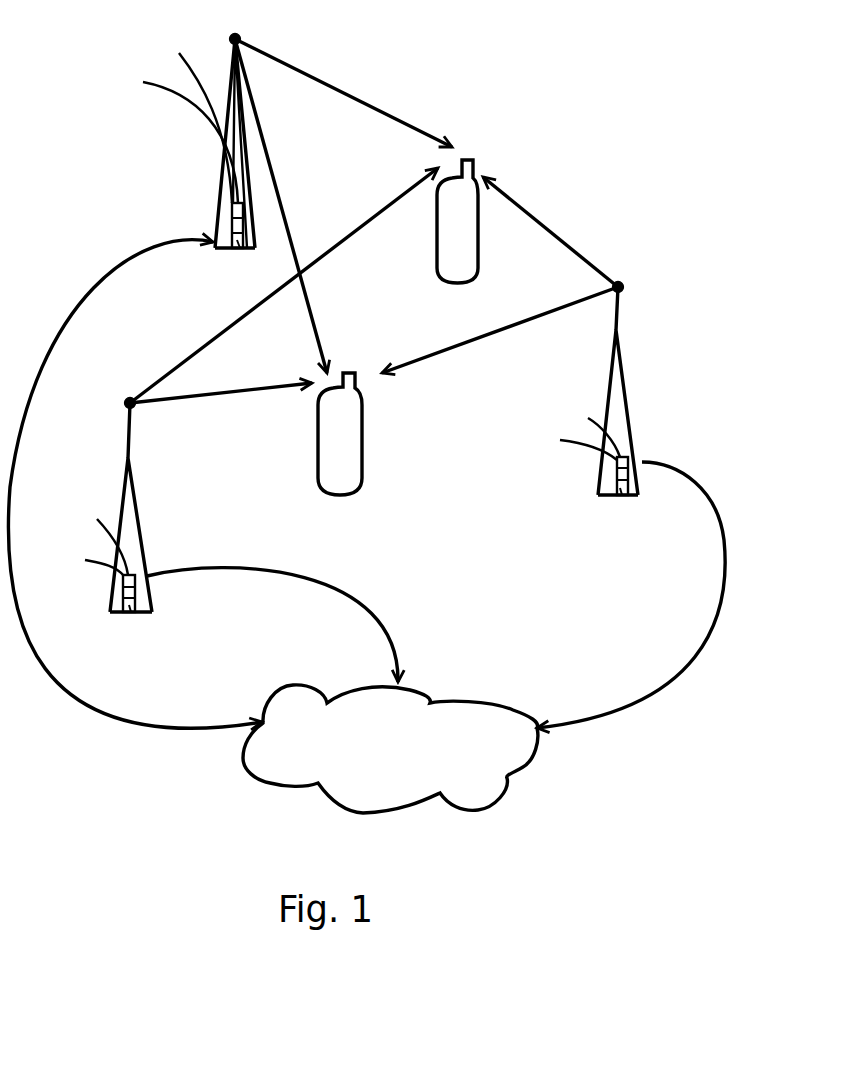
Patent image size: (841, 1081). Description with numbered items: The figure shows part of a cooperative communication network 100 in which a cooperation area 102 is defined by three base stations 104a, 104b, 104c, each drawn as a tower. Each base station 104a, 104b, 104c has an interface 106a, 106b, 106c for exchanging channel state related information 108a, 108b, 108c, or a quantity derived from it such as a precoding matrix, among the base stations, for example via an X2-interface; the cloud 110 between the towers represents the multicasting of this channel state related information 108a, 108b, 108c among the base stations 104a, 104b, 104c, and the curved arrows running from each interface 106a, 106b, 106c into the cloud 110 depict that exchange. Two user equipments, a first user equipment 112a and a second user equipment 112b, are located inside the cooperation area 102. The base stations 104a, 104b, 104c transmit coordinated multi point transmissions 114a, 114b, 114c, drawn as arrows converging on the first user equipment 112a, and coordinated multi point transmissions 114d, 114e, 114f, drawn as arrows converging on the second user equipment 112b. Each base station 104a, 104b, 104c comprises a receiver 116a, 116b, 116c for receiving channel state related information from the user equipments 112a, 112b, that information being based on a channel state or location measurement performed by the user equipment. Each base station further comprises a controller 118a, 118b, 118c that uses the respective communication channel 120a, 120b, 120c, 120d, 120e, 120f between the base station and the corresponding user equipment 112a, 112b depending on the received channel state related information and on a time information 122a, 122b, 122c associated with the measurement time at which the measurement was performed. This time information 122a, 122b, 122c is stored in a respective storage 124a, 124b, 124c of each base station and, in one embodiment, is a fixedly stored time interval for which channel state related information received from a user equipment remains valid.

The cooperative communication network 100 is at (577, 107).
The cooperation area 102 is at (499, 411).
The base station 104a is at (224, 155).
The base station 104b is at (632, 375).
The base station 104c is at (143, 513).
The interface 106a is at (212, 234).
The interface 106b is at (636, 457).
The interface 106c is at (148, 575).
The channel state related information 108a is at (73, 317).
The channel state related information 108b is at (720, 593).
The channel state related information 108c is at (330, 577).
The cloud 110 is at (523, 771).
The first user equipment 112a is at (437, 240).
The second user equipment 112b is at (362, 455).
The coordinated multi point transmission 114a is at (343, 97).
The coordinated multi point transmission 114b is at (373, 213).
The coordinated multi point transmission 114c is at (546, 220).
The coordinated multi point transmission 114d is at (277, 173).
The coordinated multi point transmission 114e is at (232, 390).
The coordinated multi point transmission 114f is at (527, 315).
The receiver 116a is at (237, 249).
The receiver 116b is at (620, 496).
The receiver 116c is at (132, 613).
The controller 118a is at (230, 216).
The controller 118b is at (617, 475).
The controller 118c is at (123, 593).
The communication channel 120a is at (303, 72).
The communication channel 120b is at (335, 247).
The communication channel 120c is at (583, 250).
The communication channel 120d is at (288, 218).
The communication channel 120e is at (195, 398).
The communication channel 120f is at (553, 310).
The time information 122a is at (190, 108).
The time information 122b is at (579, 423).
The time information 122c is at (89, 531).
The storage 124a is at (163, 128).
The storage 124b is at (563, 440).
The storage 124c is at (83, 557).